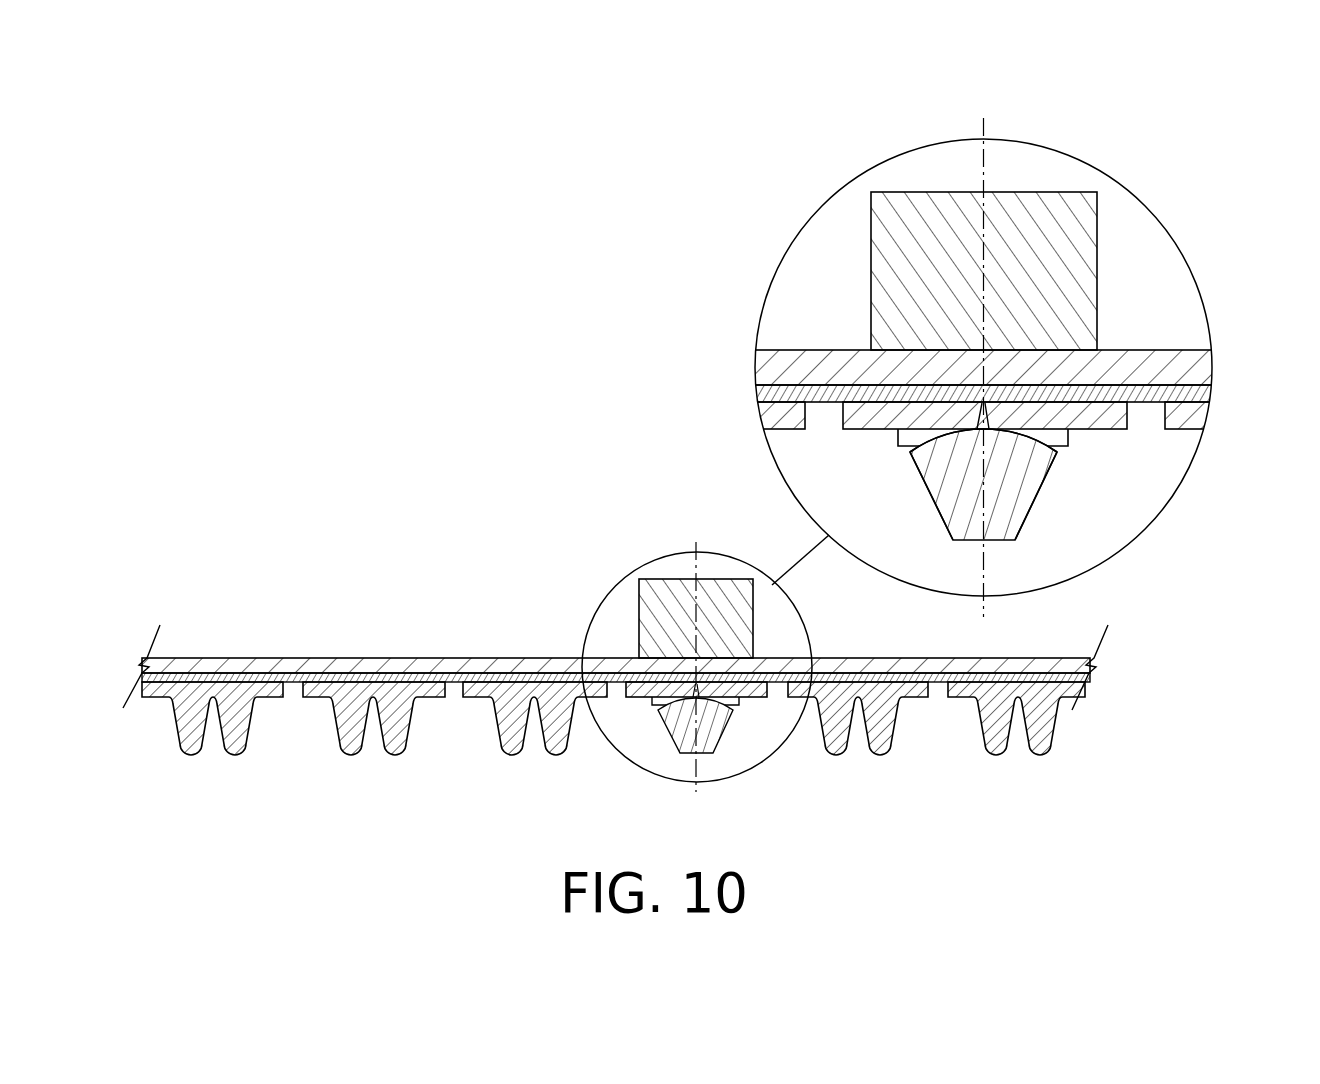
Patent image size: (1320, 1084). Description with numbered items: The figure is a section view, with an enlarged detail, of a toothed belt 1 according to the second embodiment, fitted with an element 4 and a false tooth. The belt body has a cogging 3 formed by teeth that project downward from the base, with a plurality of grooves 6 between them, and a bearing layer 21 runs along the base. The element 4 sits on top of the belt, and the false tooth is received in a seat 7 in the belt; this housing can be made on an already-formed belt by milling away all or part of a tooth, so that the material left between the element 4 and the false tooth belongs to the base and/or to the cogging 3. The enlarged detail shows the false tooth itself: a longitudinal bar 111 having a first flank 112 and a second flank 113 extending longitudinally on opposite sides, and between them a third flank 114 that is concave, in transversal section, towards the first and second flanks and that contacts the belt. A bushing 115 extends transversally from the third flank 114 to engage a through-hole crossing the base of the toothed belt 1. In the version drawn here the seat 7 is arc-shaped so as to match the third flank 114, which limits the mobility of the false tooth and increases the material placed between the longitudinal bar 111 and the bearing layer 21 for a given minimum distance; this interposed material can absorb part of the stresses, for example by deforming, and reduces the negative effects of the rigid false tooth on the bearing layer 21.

The toothed belt 1 is at (632, 690).
The cogging 3 is at (347, 720).
The element 4 is at (892, 213).
The groove 6 is at (535, 720).
The seat 7 is at (995, 428).
The bearing layer 21 is at (1155, 390).
The longitudinal bar 111 is at (1008, 522).
The first flank 112 is at (1037, 497).
The second flank 113 is at (927, 485).
The third flank 114 is at (928, 443).
The bushing 115 is at (1052, 437).